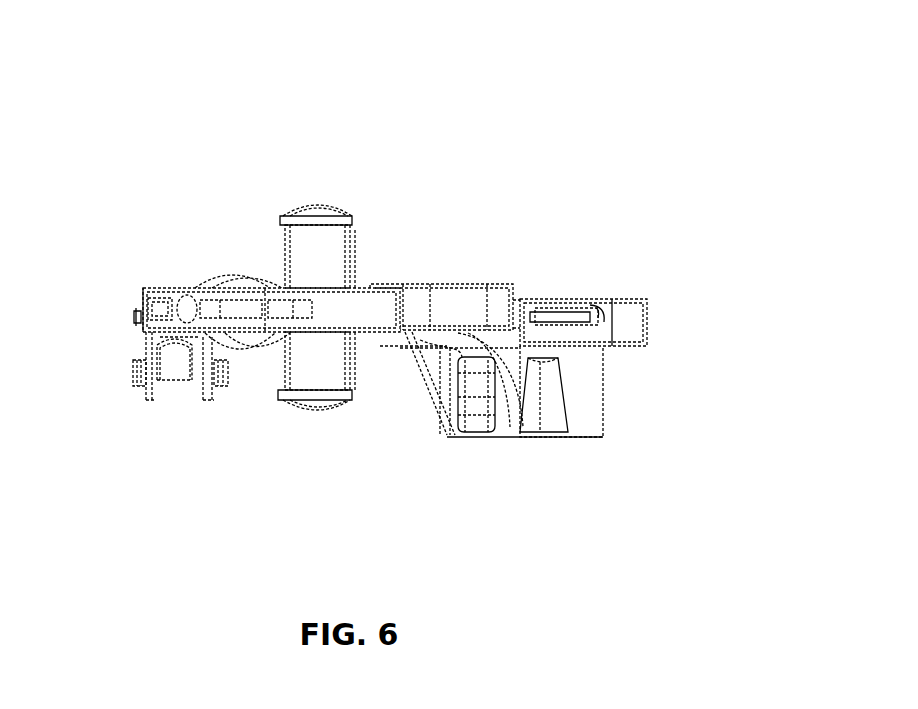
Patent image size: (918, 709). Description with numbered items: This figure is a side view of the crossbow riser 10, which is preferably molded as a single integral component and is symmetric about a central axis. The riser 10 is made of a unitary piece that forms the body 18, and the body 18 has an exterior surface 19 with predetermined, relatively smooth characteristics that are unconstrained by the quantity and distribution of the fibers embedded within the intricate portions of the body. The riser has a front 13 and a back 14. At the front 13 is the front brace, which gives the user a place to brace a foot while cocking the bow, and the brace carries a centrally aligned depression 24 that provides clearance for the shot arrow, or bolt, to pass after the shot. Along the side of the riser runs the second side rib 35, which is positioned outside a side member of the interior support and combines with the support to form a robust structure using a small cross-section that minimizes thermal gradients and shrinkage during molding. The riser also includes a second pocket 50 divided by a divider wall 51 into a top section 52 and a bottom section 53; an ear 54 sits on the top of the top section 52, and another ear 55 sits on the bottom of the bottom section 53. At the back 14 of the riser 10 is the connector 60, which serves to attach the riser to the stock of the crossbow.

The riser 10 is at (525, 241).
The front 13 is at (137, 321).
The back 14 is at (645, 317).
The body 18 is at (456, 437).
The exterior surface 19 is at (392, 305).
The depression 24 is at (147, 382).
The second side rib 35 is at (438, 312).
The second pocket 50 is at (245, 290).
The divider wall 51 is at (145, 290).
The top section 52 is at (317, 250).
The bottom section 53 is at (310, 362).
The ear 54 is at (293, 228).
The ear 55 is at (360, 390).
The connector 60 is at (607, 370).